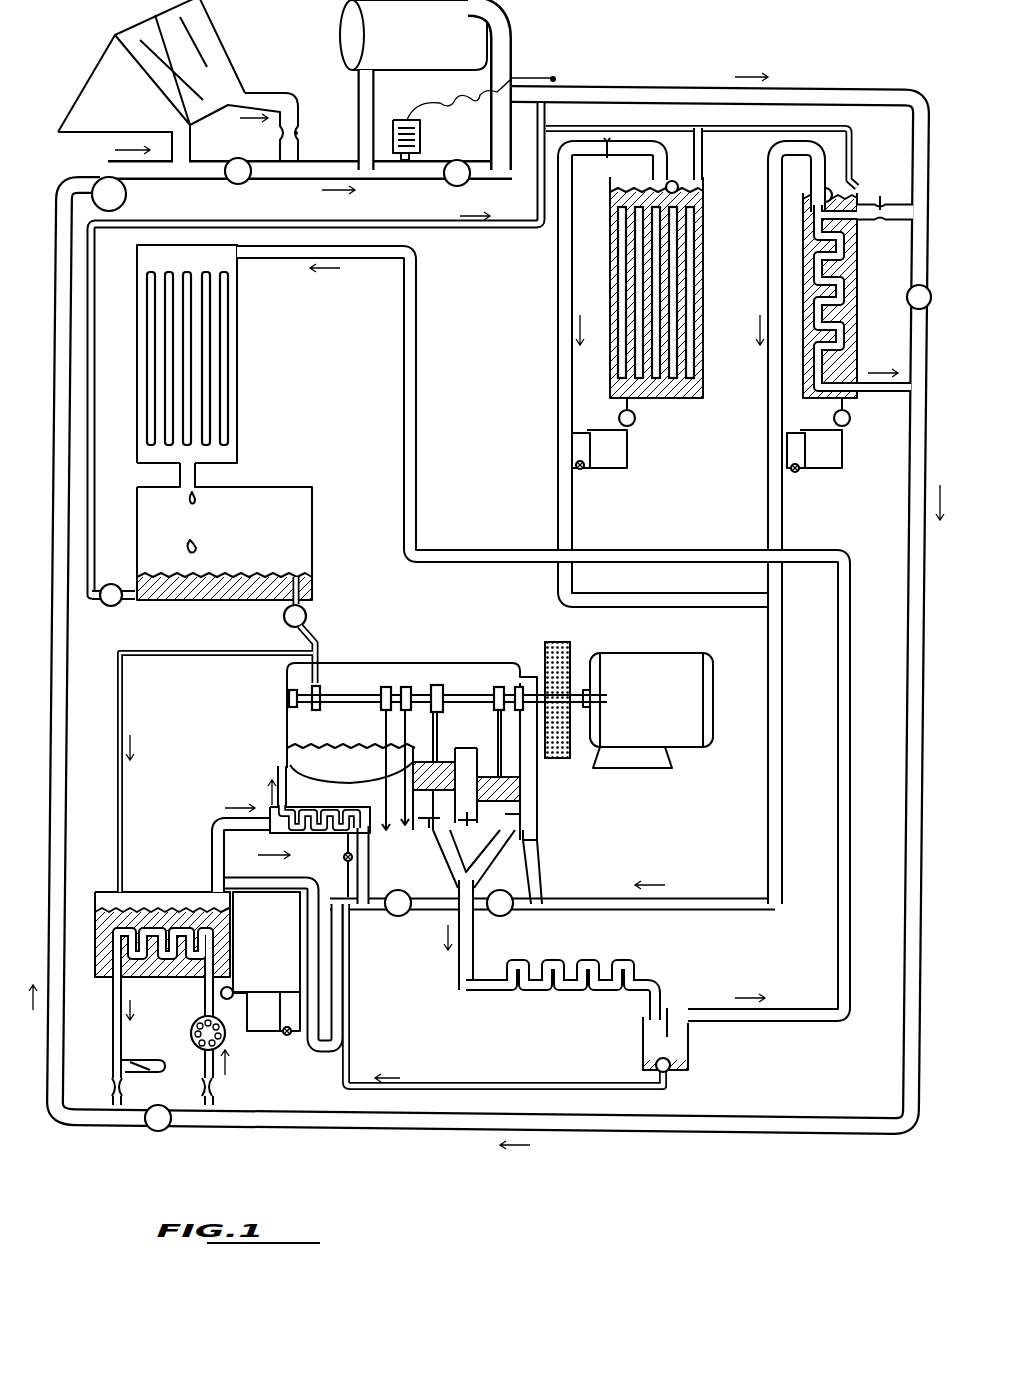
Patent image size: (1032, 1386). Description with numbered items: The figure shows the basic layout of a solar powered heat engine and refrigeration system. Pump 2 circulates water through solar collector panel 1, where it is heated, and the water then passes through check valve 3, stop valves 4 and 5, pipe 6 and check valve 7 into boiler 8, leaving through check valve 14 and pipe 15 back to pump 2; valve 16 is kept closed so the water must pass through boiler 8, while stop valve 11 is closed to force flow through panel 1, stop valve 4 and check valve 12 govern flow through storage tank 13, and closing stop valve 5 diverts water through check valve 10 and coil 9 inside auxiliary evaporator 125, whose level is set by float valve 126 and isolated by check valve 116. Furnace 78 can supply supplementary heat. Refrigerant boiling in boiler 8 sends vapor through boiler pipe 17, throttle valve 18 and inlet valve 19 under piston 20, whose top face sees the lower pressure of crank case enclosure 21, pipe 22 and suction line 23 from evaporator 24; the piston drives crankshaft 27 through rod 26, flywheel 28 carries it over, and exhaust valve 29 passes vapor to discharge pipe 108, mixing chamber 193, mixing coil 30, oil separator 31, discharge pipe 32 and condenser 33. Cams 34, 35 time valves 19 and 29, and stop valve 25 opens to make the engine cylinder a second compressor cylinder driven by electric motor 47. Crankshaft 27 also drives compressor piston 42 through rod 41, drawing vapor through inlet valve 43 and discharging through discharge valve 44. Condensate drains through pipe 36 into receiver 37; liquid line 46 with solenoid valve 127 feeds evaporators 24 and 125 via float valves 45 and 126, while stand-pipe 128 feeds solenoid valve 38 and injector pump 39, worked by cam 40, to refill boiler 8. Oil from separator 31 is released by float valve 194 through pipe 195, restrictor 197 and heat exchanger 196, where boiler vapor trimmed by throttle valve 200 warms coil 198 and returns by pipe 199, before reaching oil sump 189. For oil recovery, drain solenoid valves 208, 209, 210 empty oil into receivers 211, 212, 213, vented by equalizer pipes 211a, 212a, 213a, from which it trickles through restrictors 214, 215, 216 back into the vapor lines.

The solar collector panel 1 is at (217, 18).
The pump 2 is at (140, 197).
The check valve 3 is at (300, 131).
The stop valve 4 is at (468, 163).
The stop valve 5 is at (944, 308).
The pipe 6 is at (330, 1135).
The check valve 7 is at (218, 1089).
The boiler 8 is at (172, 888).
The coil 9 is at (862, 280).
The check valve 10 is at (897, 205).
The stop valve 11 is at (243, 186).
The check valve 12 is at (500, 53).
The storage tank 13 is at (334, 42).
The check valve 14 is at (106, 1089).
The pipe 15 is at (44, 690).
The valve 16 is at (172, 1133).
The boiler pipe 17 is at (356, 911).
The throttle valve 18 is at (405, 913).
The inlet valve 19 is at (413, 805).
The piston 20 is at (448, 758).
The crank case enclosure 21 is at (430, 664).
The pipe 22 is at (528, 782).
The suction line 23 is at (690, 912).
The evaporator 24 is at (712, 232).
The stop valve 25 is at (506, 913).
The rod 26 is at (440, 719).
The crankshaft 27 is at (466, 680).
The flywheel 28 is at (570, 650).
The exhaust valve 29 is at (447, 822).
The mixing coil 30 is at (572, 963).
The oil separator 31 is at (692, 1046).
The discharge pipe 32 is at (824, 972).
The condenser 33 is at (247, 302).
The cam 34 is at (410, 690).
The cam 35 is at (388, 690).
The pipe 36 is at (198, 480).
The receiver 37 is at (318, 555).
The liquid line solenoid valve 38 is at (308, 611).
The injector pump 39 is at (320, 660).
The cam 40 is at (321, 690).
The rod 41 is at (503, 728).
The compressor piston 42 is at (503, 776).
The inlet valve 43 is at (525, 815).
The discharge valve 44 is at (484, 840).
The float valve 45 is at (706, 187).
The liquid line 46 is at (388, 219).
The electric motor 47 is at (688, 656).
The furnace 78 is at (192, 1036).
The discharge pipe 108 is at (473, 958).
The check valve 116 is at (606, 162).
The auxiliary evaporator 125 is at (866, 262).
The float valve 126 is at (866, 172).
The liquid line solenoid valve 127 is at (110, 607).
The stand-pipe 128 is at (312, 576).
The oil sump 189 is at (285, 752).
The mixing chamber 193 is at (484, 994).
The float valve 194 is at (650, 1060).
The pipe 195 is at (545, 1088).
The heat exchanger 196 is at (270, 802).
The restrictor 197 is at (343, 858).
The coil 198 is at (340, 810).
The pipe 199 is at (375, 850).
The throttle valve 200 is at (213, 850).
The oil drain solenoid valve 208 is at (637, 415).
The oil drain solenoid valve 209 is at (852, 415).
The oil drain solenoid valve 210 is at (233, 990).
The oil receiver 211 is at (635, 453).
The equalizer pipe 211a is at (588, 428).
The oil receiver 212 is at (850, 453).
The equalizer pipe 212a is at (802, 428).
The oil receiver 213 is at (270, 1036).
The equalizer pipe 213a is at (286, 980).
The restrictor 214 is at (584, 472).
The restrictor 215 is at (797, 474).
The restrictor 216 is at (286, 1040).